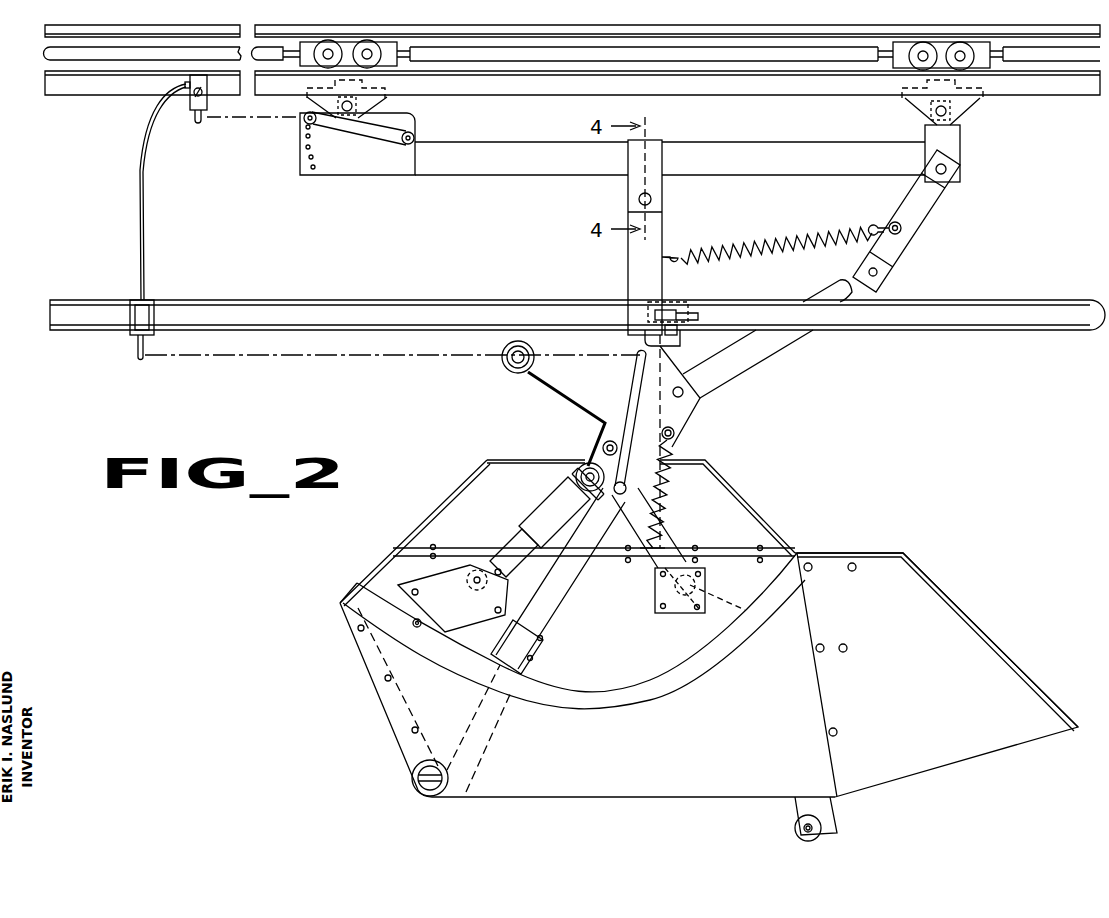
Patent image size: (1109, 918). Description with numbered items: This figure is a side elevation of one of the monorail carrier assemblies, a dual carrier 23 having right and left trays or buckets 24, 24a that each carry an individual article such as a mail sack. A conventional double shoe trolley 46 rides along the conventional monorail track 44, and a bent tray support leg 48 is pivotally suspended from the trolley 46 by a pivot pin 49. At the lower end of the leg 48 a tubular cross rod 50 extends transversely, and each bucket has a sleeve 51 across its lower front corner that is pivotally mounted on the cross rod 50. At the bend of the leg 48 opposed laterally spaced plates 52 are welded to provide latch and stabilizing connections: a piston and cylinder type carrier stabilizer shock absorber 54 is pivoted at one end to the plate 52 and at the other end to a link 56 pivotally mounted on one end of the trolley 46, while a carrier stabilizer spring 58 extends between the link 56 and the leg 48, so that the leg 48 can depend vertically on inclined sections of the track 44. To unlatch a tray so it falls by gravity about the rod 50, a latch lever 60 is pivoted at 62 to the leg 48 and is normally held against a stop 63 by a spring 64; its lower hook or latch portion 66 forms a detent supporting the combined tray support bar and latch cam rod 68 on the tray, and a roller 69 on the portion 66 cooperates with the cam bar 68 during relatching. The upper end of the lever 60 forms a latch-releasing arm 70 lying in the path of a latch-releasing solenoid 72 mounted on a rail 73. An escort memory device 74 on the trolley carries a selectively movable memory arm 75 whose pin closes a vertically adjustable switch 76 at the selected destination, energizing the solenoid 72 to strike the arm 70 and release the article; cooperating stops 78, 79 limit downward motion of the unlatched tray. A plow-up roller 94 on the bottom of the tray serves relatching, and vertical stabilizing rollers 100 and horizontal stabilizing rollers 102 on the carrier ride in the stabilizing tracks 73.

The dual carrier 23 is at (390, 540).
The tray or bucket 24 is at (750, 523).
The tray or bucket 24a is at (877, 558).
The monorail track 44 is at (1022, 118).
The double shoe trolley 46 is at (981, 159).
The tray or bucket support leg 48 is at (632, 259).
The pivot pin 49 is at (632, 198).
The tubular cross rod 50 is at (408, 784).
The sleeve 51 is at (418, 757).
The plate 52 is at (582, 398).
The carrier stabilizer shock absorber 54 is at (765, 347).
The link 56 is at (918, 213).
The carrier stabilizer spring 58 is at (783, 242).
The latch lever 60 is at (662, 548).
The pivot 62 is at (664, 491).
The stop 63 is at (603, 443).
The spring 64 is at (673, 472).
The hook or latch portion 66 is at (655, 598).
The combined tray support bar and latch cam rod 68 is at (655, 578).
The roller 69 is at (703, 590).
The latch-releasing arm 70 is at (635, 362).
The latch-releasing solenoid 72 is at (130, 336).
The rail 73 is at (97, 300).
The escort memory device 74 is at (374, 170).
The memory arm 75 is at (333, 125).
The switch 76 is at (203, 107).
The stop 78 is at (390, 582).
The stop 79 is at (533, 650).
The plow-up roller 94 is at (795, 832).
The vertical stabilizing roller 100 is at (505, 369).
The horizontal stabilizing roller 102 is at (680, 318).